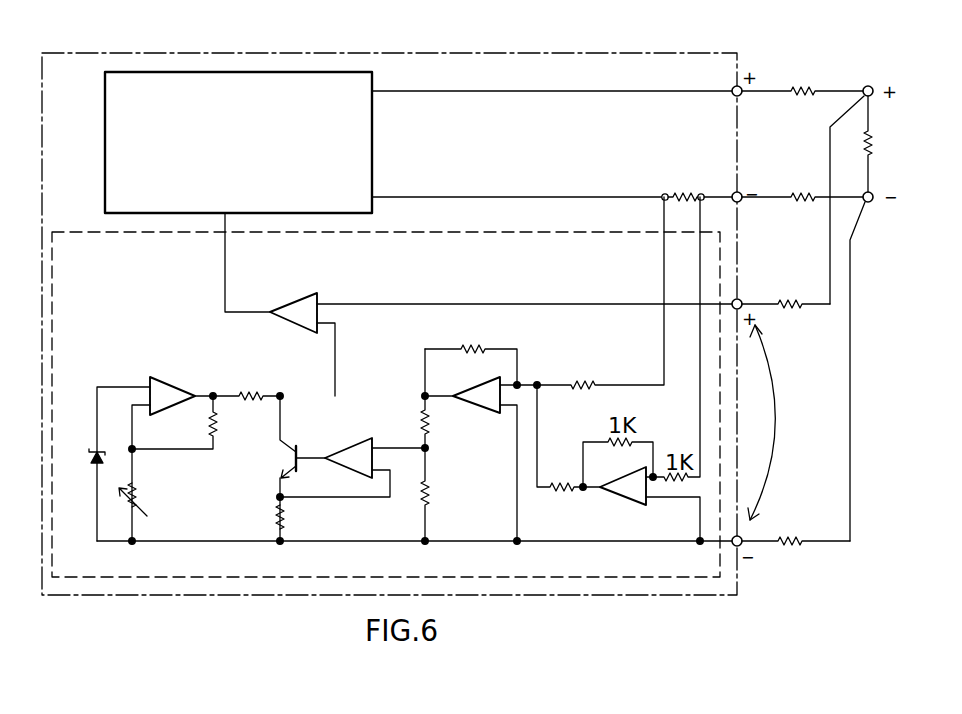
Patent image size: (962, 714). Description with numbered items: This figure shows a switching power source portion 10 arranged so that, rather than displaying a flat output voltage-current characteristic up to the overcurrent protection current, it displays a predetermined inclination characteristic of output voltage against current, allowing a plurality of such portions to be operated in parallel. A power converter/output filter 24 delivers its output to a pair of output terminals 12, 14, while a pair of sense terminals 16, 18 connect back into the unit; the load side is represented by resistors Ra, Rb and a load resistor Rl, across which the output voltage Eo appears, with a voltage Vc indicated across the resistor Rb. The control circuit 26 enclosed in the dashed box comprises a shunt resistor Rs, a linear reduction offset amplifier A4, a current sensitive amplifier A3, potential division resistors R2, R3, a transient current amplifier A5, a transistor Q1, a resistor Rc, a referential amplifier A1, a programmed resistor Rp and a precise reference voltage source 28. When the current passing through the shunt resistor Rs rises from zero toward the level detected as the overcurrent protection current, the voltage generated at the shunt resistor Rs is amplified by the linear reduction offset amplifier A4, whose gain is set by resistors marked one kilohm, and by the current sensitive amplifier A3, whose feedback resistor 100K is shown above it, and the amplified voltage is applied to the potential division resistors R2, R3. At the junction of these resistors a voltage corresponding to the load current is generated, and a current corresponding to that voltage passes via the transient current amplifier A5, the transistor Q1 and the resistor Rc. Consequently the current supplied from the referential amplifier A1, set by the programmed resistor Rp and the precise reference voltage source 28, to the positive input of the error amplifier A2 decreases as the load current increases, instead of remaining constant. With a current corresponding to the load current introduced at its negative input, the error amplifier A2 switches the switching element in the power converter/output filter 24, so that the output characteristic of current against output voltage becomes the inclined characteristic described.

The power supply 10 is at (321, 53).
The positive output terminal 12 is at (748, 88).
The negative output terminal 14 is at (751, 105).
The positive sense terminal 16 is at (742, 302).
The negative sense terminal 18 is at (745, 540).
The power converter/output filter 24 is at (105, 97).
The control circuit 26 is at (480, 232).
The precise reference voltage source 28 is at (92, 450).
The referential amplifier A1 is at (176, 382).
The error amplifier A2 is at (289, 299).
The current sensitive amplifier A3 is at (470, 384).
The linear reduction offset amplifier A4 is at (618, 482).
The transient current amplifier A5 is at (334, 446).
The transistor Q1 is at (290, 456).
The resistor Ra is at (806, 88).
The resistor Rb is at (808, 202).
The resistor Rc is at (293, 514).
The shunt resistor Rs is at (685, 194).
The load resistor Rl is at (871, 143).
The programmed resistor Rp is at (143, 492).
The potential division resistor R2 is at (422, 421).
The potential division resistor R3 is at (428, 492).
The resistor 100K is at (471, 354).
The compensation voltage Vc is at (822, 187).
The output voltage Eo is at (918, 93).